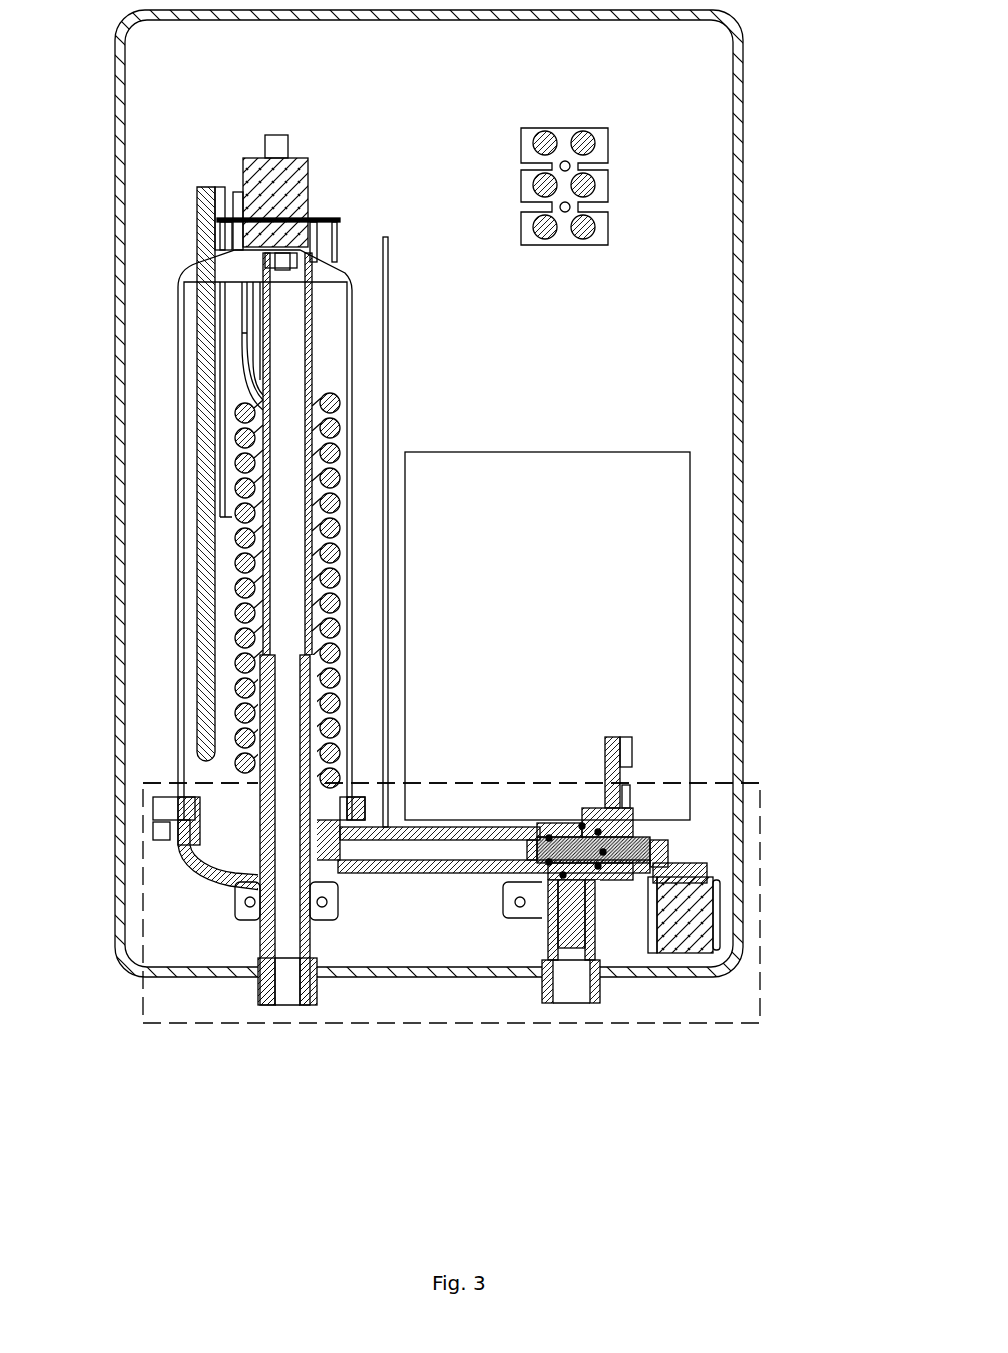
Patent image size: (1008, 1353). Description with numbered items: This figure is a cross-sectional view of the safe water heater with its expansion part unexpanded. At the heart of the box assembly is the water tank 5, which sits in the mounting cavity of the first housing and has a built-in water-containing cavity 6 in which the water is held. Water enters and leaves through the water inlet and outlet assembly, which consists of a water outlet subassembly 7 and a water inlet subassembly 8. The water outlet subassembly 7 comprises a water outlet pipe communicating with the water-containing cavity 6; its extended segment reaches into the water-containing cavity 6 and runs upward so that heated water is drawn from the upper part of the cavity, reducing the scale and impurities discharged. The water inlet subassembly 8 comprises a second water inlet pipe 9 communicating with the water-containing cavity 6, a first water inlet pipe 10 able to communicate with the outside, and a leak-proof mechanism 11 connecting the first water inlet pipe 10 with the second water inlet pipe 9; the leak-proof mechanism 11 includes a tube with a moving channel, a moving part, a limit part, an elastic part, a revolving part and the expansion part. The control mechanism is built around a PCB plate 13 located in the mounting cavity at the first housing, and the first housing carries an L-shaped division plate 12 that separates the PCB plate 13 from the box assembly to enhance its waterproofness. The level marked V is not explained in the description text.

The water tank 5 is at (178, 702).
The water-containing cavity 6 is at (195, 758).
The water outlet subassembly 7 is at (270, 932).
The water inlet subassembly 8 is at (673, 1102).
The second water inlet pipe 9 is at (461, 868).
The first water inlet pipe 10 is at (598, 1003).
The leak-proof mechanism 11 is at (700, 893).
The division plate 12 is at (388, 352).
The PCB plate 13 is at (525, 477).
The water level V is at (480, 784).